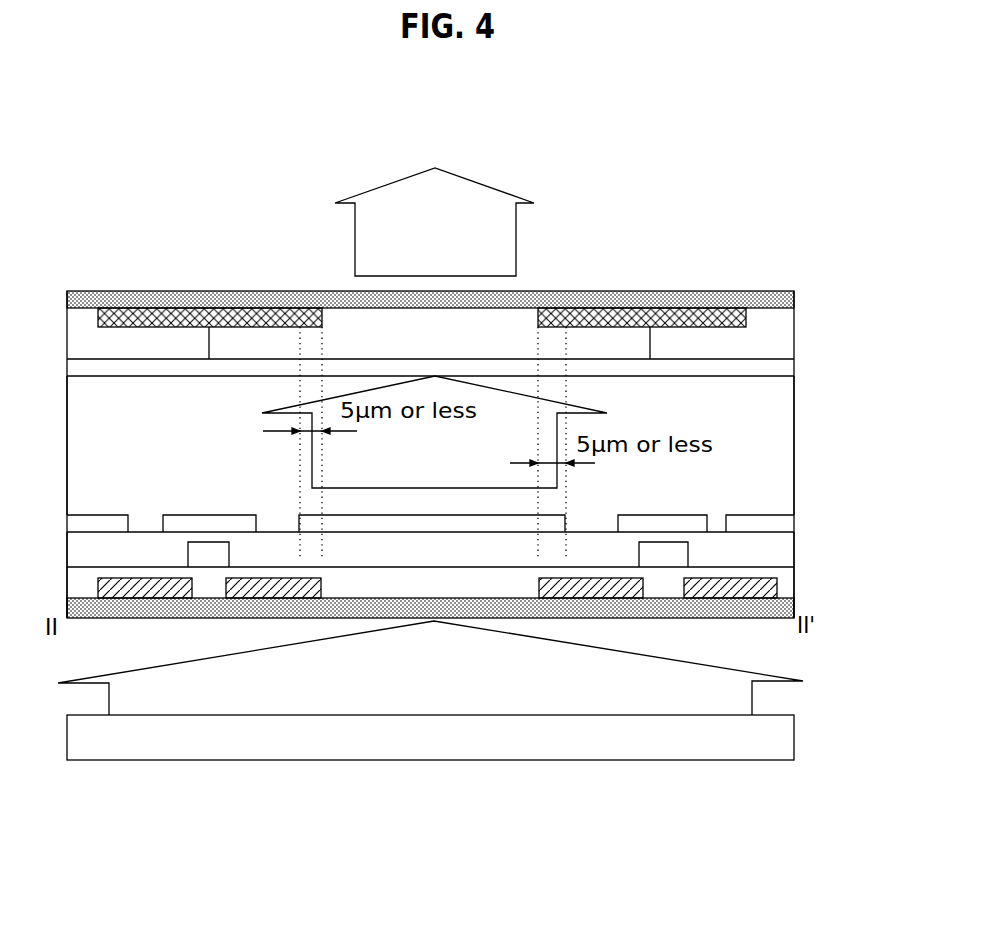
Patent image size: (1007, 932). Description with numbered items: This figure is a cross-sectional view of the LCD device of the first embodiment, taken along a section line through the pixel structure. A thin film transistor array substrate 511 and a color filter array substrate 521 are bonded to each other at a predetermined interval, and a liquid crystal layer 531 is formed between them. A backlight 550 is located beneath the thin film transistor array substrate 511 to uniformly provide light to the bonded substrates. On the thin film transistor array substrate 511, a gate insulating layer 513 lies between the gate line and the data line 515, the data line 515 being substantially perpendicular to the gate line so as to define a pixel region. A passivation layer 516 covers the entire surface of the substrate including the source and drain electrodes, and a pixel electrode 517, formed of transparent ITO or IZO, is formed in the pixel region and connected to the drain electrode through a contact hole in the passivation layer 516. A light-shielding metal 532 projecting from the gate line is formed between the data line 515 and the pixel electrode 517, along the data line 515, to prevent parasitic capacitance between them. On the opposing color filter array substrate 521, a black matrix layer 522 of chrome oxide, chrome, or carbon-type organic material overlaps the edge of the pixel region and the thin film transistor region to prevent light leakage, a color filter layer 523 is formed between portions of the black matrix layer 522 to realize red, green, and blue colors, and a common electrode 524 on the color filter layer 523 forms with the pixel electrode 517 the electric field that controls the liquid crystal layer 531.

The color filter array substrate 521 is at (748, 298).
The black matrix layer 522 is at (663, 312).
The color filter layer 523 is at (763, 346).
The common electrode 524 is at (708, 366).
The liquid crystal layer 531 is at (780, 447).
The pixel electrode 517 is at (360, 526).
The passivation layer 516 is at (785, 548).
The data line 515 is at (664, 553).
The gate insulating layer 513 is at (786, 585).
The light-shielding metal 532 is at (143, 592).
The thin film transistor array substrate 511 is at (757, 608).
The backlight 550 is at (633, 745).